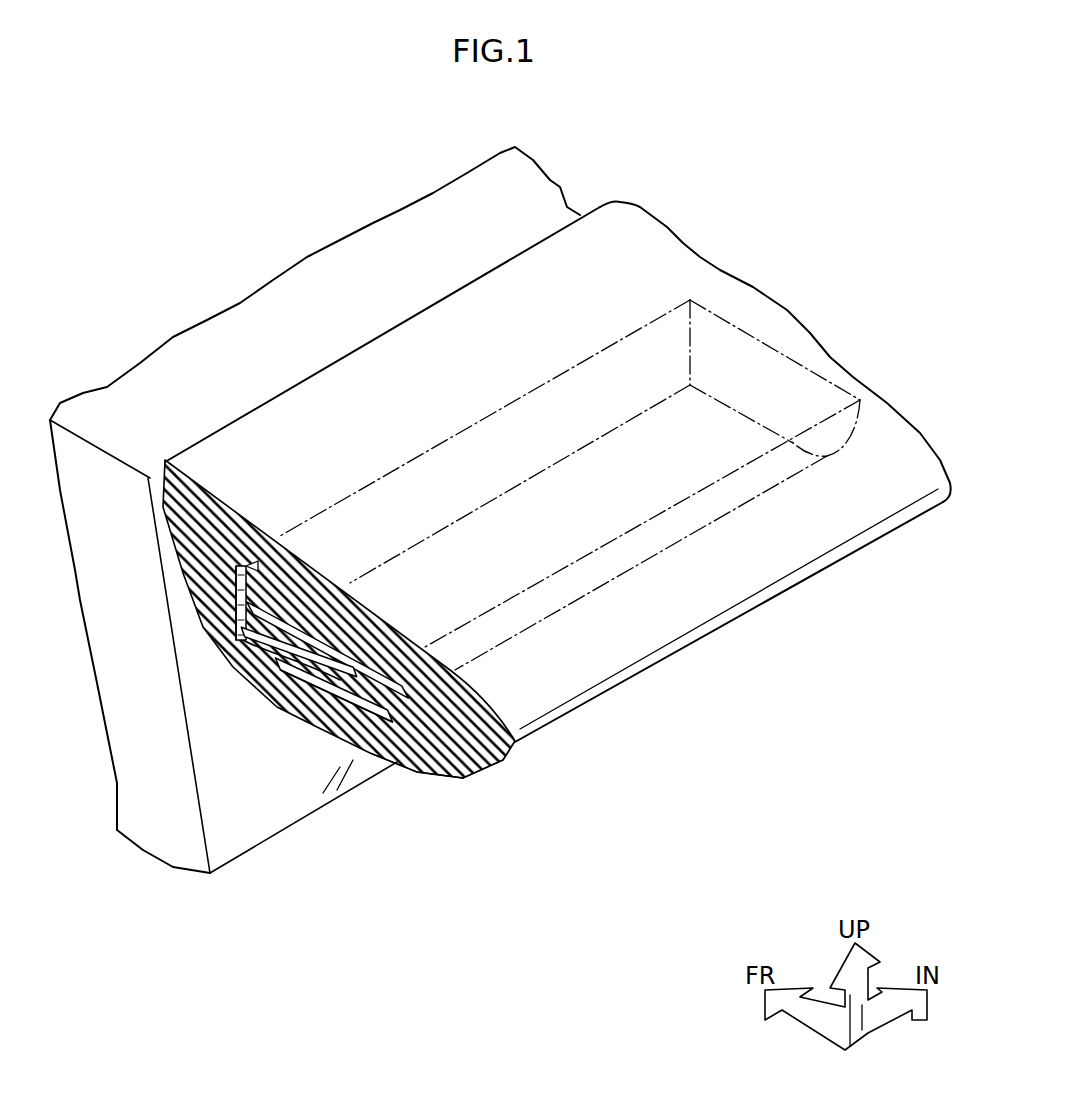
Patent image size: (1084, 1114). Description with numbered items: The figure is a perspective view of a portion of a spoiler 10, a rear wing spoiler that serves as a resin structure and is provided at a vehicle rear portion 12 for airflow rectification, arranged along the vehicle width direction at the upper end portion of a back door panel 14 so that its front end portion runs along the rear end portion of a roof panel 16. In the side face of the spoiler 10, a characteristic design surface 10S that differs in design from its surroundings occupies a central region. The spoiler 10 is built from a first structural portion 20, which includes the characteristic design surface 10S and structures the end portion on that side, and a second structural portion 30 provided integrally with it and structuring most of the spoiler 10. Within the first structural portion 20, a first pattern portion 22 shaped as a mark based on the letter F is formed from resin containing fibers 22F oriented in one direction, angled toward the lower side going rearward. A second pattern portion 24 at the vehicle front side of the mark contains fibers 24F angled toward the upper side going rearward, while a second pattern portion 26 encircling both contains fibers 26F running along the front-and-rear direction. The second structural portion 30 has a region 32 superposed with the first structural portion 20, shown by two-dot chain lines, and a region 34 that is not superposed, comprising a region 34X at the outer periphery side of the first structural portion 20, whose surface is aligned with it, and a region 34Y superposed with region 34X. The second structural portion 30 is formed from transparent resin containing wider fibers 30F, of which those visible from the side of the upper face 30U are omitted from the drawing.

The spoiler 10 is at (660, 250).
The characteristic design surface 10S is at (268, 674).
The vehicle rear portion 12 is at (648, 136).
The back door panel 14 is at (233, 831).
The roof panel 16 is at (352, 270).
The first structural portion 20 is at (316, 679).
The first pattern portion 22 is at (302, 621).
The fibers 22F is at (345, 628).
The second pattern portion 24 is at (238, 607).
The fibers 24F is at (260, 585).
The second pattern portion 26 is at (385, 693).
The fibers 26F is at (342, 686).
The second structural portion 30 is at (336, 418).
The fibers 30F is at (416, 752).
The upper face 30U is at (445, 350).
The region 32 is at (503, 552).
The region 34 is at (711, 578).
The region 34X is at (457, 745).
The region 34Y is at (605, 660).